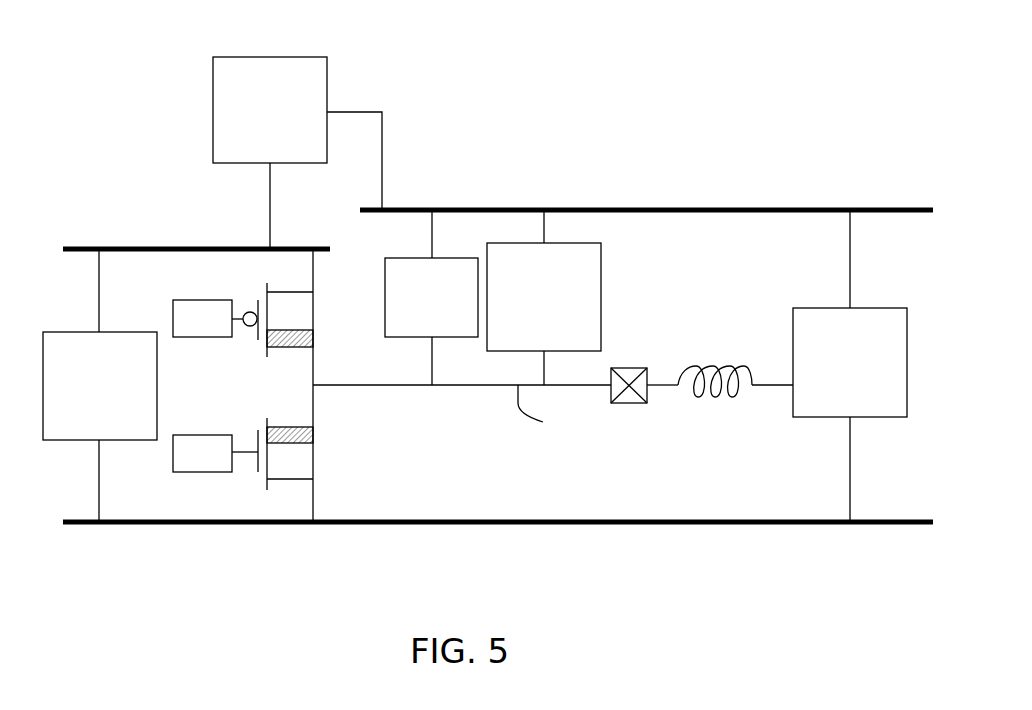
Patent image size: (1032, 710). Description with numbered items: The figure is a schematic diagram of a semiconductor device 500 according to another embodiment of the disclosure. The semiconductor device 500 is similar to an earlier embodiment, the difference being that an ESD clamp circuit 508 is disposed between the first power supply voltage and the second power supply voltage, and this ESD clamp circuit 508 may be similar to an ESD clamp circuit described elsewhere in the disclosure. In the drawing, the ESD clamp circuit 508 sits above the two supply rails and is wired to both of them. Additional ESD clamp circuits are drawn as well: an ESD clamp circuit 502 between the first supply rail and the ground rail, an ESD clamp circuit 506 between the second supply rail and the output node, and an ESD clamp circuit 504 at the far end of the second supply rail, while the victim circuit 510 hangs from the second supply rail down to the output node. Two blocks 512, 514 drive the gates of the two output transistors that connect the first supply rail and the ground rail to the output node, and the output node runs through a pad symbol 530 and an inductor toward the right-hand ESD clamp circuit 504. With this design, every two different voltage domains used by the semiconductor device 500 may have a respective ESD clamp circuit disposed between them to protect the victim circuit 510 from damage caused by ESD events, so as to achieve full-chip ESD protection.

The semiconductor device 500 is at (84, 62).
The ESD clamp circuit 502 is at (63, 332).
The ESD clamp circuit 504 is at (807, 308).
The ESD clamp circuit 506 is at (601, 273).
The ESD clamp circuit 508 is at (213, 96).
The victim circuit 510 is at (400, 258).
The pre-driver for transistor Q2 512 is at (193, 300).
The pre-driver for transistor Q1 514 is at (202, 472).
The output pad 530 is at (630, 368).